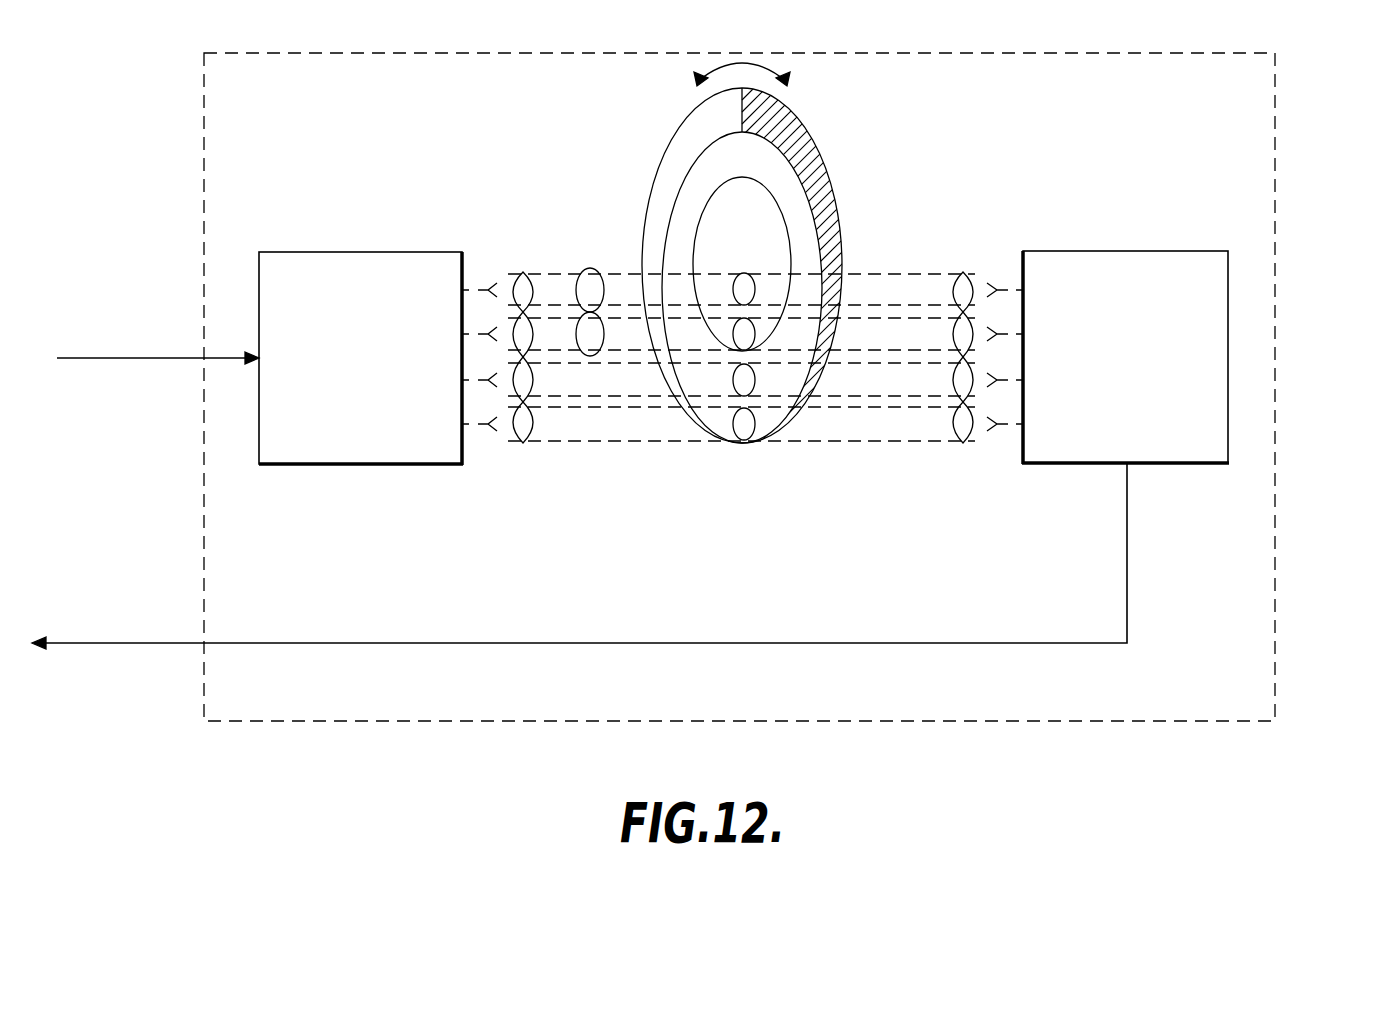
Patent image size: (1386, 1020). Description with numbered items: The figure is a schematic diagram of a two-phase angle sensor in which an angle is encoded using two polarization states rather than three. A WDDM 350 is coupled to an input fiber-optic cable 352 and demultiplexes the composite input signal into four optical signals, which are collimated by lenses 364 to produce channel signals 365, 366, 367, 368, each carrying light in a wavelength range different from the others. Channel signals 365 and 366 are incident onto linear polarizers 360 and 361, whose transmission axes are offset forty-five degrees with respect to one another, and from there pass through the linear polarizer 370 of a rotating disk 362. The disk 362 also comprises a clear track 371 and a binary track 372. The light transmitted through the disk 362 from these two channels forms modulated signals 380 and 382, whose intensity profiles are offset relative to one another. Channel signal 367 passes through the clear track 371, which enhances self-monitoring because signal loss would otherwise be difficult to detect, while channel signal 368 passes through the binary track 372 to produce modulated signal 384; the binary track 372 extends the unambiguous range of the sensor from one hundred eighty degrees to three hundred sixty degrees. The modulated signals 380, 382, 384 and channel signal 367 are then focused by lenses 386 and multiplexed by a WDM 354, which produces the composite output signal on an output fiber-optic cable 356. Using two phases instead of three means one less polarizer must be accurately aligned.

The WDDM 350 is at (355, 466).
The input fiber-optic cable 352 is at (100, 356).
The WDM 354 is at (1229, 358).
The output fiber-optic cable 356 is at (98, 642).
The linear polarizer 360 is at (597, 283).
The linear polarizer 361 is at (585, 325).
The rotating disk 362 is at (743, 462).
The lenses 364 is at (521, 462).
The channel signal 365 is at (543, 283).
The channel signal 366 is at (545, 340).
The channel signal 367 is at (593, 382).
The channel signal 368 is at (650, 418).
The linear polarizer 370 is at (720, 227).
The clear track 371 is at (782, 175).
The binary track 372 is at (690, 143).
The modulated signal 380 is at (887, 288).
The modulated signal 382 is at (932, 335).
The modulated signal 384 is at (820, 423).
The lenses 386 is at (959, 468).